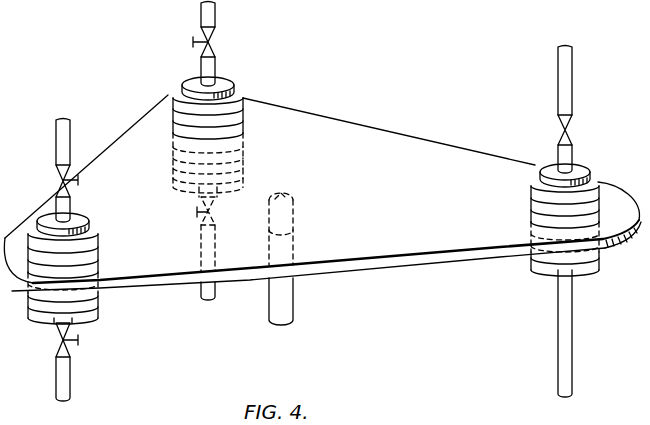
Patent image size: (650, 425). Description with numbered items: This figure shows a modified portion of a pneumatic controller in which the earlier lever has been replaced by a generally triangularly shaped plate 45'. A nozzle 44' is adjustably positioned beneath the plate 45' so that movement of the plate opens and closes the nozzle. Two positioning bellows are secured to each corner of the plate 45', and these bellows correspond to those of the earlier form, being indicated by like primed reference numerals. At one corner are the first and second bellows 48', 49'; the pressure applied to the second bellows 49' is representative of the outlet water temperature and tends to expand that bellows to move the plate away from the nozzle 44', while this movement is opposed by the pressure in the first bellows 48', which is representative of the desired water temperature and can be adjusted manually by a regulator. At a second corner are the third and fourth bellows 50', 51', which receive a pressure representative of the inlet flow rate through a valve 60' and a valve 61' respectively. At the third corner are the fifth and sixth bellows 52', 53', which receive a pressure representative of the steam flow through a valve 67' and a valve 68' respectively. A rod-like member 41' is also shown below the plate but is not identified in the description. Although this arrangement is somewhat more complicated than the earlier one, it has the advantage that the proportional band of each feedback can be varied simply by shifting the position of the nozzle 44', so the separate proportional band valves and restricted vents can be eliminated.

The generally triangularly shaped plate 45' is at (322, 193).
The third bellows 50' is at (229, 98).
The fourth bellows 51' is at (227, 163).
The valve 60' is at (225, 30).
The valve 61' is at (224, 243).
The fifth bellows 52' is at (83, 237).
The sixth bellows 53' is at (81, 300).
The valve 67' is at (46, 158).
The valve 68' is at (46, 359).
The first bellows 48' is at (539, 137).
The second bellows 49' is at (586, 309).
The conductor rod 41' is at (302, 301).
The nozzle 44' is at (300, 226).